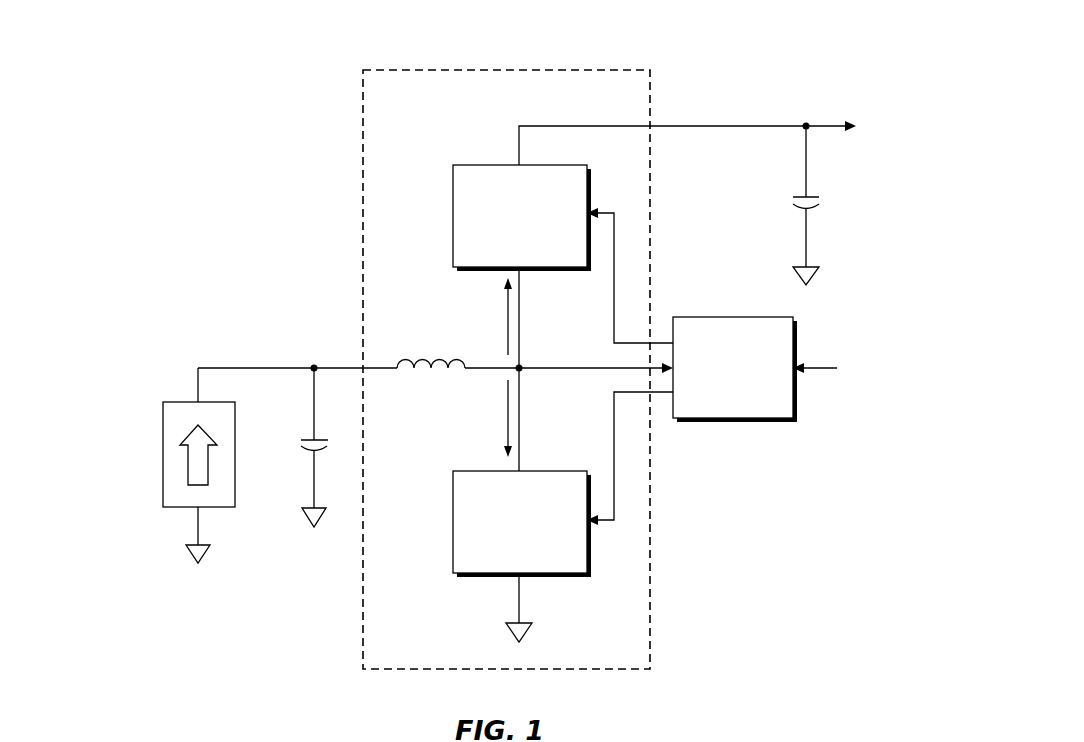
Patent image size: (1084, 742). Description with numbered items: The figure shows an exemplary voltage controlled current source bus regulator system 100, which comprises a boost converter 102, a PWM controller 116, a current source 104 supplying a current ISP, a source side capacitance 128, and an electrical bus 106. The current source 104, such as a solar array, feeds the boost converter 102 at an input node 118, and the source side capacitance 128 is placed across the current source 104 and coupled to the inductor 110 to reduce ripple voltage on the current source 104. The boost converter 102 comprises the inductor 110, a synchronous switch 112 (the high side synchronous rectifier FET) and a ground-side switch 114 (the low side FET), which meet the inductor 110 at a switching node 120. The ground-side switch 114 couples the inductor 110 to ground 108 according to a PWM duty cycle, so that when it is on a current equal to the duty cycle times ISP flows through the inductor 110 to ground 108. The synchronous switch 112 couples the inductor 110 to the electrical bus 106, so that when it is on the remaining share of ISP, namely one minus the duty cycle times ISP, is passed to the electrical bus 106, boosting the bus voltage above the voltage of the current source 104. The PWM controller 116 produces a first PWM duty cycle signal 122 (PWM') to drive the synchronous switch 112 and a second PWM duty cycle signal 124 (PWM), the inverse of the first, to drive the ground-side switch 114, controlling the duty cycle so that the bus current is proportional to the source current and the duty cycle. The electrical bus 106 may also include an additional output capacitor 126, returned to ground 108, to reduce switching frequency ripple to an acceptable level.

The voltage controlled current source bus regulator system 100 is at (773, 23).
The boost converter 102 is at (372, 70).
The current source 104 is at (163, 482).
The electrical bus 106 is at (808, 124).
The ground 108 is at (190, 556).
The inductor 110 is at (410, 372).
The synchronous switch 112 is at (452, 178).
The ground-side switch 114 is at (452, 485).
The PWM controller 116 is at (702, 317).
The input node 118 is at (197, 380).
The switching node 120 is at (522, 366).
The first PWM duty cycle signal 122 is at (616, 240).
The second PWM duty cycle signal 124 is at (616, 500).
The output capacitor 126 is at (811, 196).
The source side capacitance 128 is at (317, 437).